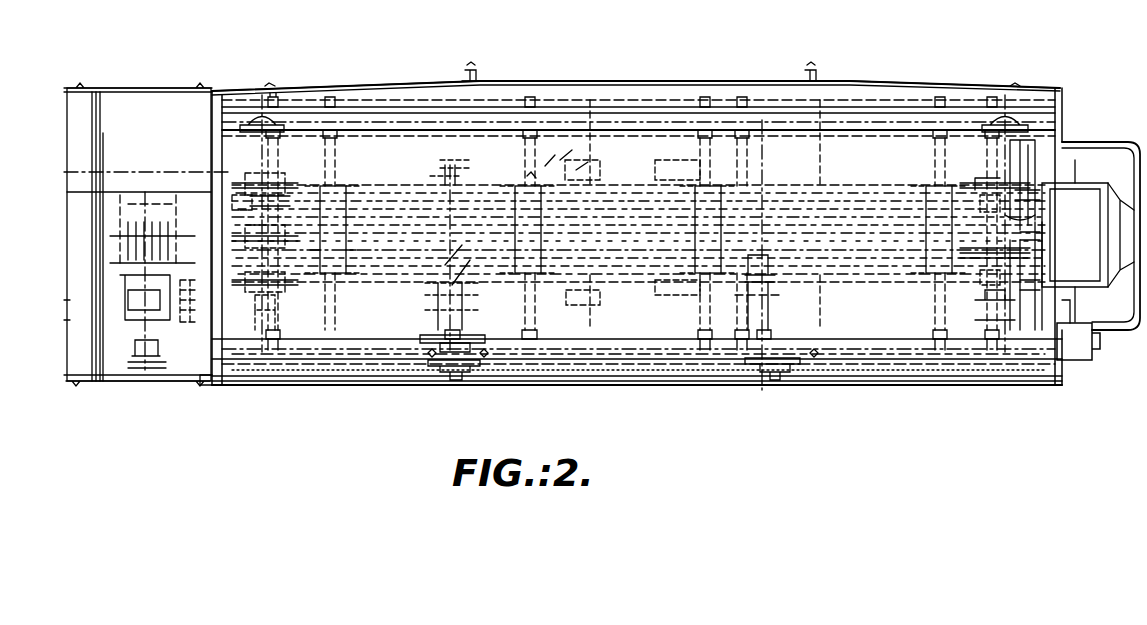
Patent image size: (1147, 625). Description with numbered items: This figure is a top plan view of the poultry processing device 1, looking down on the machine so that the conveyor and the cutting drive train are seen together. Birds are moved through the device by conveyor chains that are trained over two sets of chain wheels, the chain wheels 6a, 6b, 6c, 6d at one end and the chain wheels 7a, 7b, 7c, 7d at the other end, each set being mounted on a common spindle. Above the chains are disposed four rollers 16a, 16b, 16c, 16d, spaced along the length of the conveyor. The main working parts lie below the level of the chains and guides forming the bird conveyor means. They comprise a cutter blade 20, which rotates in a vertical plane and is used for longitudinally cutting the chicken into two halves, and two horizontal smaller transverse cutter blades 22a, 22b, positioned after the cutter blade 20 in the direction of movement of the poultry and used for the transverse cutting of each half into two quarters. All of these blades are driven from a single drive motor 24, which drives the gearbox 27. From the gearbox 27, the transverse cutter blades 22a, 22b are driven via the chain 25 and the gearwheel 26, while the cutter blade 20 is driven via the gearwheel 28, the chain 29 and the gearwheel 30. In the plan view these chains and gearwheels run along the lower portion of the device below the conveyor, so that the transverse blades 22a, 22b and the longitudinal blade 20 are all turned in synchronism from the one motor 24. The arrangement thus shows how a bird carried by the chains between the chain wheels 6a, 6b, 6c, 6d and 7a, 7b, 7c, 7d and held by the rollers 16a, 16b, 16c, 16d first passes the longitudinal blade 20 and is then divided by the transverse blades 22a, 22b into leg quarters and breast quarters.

The device 1 is at (743, 65).
The chain wheel 6a is at (290, 287).
The chain wheel 6b is at (233, 237).
The chain wheel 6c is at (233, 200).
The chain wheel 6d is at (287, 182).
The chain wheel 7a is at (973, 290).
The chain wheel 7b is at (970, 253).
The chain wheel 7c is at (1013, 217).
The chain wheel 7d is at (972, 185).
The roller 16a is at (332, 197).
The roller 16b is at (523, 193).
The roller 16c is at (707, 197).
The roller 16d is at (935, 202).
The cutter blade 20 is at (808, 233).
The transverse cutter blade 22a is at (427, 290).
The transverse cutter blade 22b is at (430, 165).
The drive motor 24 is at (127, 275).
The chain 25 is at (348, 368).
The gearwheel 26 is at (457, 370).
The gearbox 27 is at (455, 325).
The gearwheel 28 is at (473, 360).
The chain 29 is at (583, 362).
The gearwheel 30 is at (783, 363).